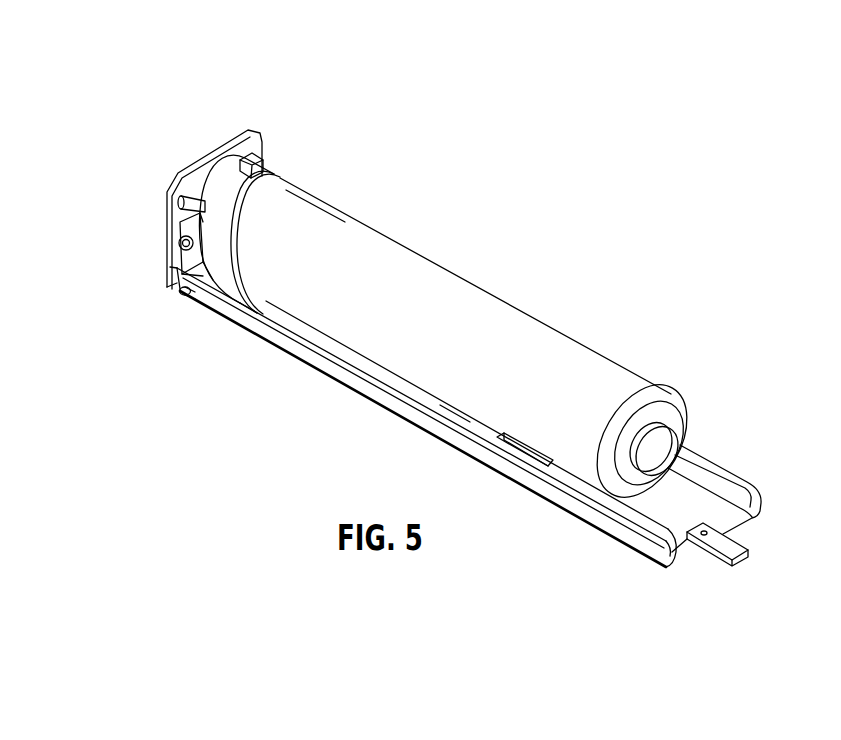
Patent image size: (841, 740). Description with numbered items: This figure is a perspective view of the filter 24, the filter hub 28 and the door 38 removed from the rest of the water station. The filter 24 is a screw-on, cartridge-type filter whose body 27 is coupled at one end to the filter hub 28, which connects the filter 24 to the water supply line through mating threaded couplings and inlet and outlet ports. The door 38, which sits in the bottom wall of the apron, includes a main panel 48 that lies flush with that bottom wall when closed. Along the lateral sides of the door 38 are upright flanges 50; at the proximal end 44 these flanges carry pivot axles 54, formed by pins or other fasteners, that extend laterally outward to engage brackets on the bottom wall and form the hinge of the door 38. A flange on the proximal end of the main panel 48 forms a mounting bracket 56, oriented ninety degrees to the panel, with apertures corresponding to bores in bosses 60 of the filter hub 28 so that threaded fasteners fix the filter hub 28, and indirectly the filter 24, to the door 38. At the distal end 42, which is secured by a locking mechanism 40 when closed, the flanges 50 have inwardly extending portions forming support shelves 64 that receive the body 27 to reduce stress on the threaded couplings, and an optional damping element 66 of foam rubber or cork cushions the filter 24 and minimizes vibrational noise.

The filter 24 is at (452, 292).
The body 27 is at (523, 353).
The filter hub 28 is at (275, 168).
The door 38 is at (426, 459).
The locking mechanism 40 is at (707, 562).
The distal end 42 is at (635, 549).
The proximal end 44 is at (223, 313).
The main panel 48 is at (687, 507).
The upright flanges 50 is at (350, 389).
The pivot axles 54 is at (175, 298).
The mounting bracket 56 is at (223, 153).
The bosses 60 is at (193, 197).
The support shelves 64 is at (480, 427).
The damping element 66 is at (513, 453).